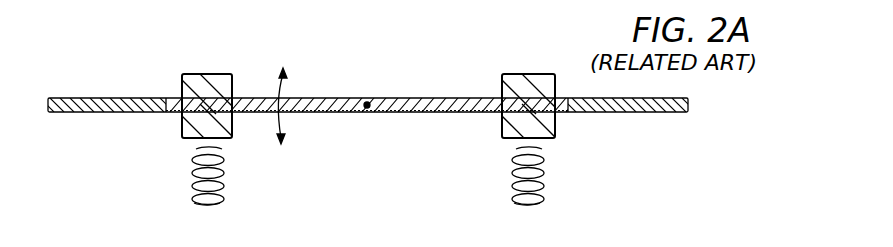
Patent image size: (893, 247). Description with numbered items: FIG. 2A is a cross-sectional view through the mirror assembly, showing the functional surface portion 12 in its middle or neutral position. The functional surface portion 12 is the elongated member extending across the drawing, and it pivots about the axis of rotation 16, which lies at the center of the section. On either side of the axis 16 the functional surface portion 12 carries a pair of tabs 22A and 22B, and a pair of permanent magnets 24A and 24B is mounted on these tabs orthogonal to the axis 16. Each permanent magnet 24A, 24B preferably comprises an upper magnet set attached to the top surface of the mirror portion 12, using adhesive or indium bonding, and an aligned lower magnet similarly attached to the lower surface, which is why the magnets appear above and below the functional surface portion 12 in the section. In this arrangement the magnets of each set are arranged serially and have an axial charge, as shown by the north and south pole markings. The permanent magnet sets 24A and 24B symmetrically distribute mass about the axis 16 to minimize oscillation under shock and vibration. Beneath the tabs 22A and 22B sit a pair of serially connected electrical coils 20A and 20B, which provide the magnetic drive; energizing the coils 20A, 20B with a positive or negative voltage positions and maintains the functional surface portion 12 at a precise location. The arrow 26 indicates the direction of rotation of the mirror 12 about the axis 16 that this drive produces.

The functional surface portion 12 is at (452, 97).
The axis 16 is at (367, 103).
The electrical coil 20A is at (192, 185).
The electrical coil 20B is at (544, 183).
The tab 22A is at (233, 97).
The tab 22B is at (522, 113).
The permanent magnet 24A is at (200, 74).
The permanent magnet 24B is at (538, 74).
The arrow 26 is at (287, 129).